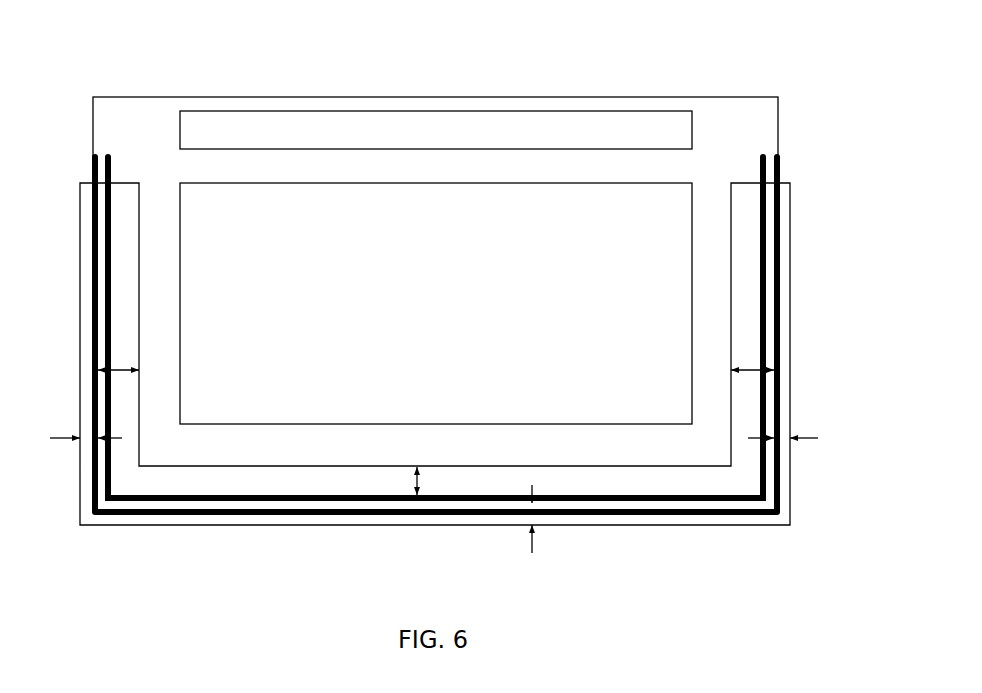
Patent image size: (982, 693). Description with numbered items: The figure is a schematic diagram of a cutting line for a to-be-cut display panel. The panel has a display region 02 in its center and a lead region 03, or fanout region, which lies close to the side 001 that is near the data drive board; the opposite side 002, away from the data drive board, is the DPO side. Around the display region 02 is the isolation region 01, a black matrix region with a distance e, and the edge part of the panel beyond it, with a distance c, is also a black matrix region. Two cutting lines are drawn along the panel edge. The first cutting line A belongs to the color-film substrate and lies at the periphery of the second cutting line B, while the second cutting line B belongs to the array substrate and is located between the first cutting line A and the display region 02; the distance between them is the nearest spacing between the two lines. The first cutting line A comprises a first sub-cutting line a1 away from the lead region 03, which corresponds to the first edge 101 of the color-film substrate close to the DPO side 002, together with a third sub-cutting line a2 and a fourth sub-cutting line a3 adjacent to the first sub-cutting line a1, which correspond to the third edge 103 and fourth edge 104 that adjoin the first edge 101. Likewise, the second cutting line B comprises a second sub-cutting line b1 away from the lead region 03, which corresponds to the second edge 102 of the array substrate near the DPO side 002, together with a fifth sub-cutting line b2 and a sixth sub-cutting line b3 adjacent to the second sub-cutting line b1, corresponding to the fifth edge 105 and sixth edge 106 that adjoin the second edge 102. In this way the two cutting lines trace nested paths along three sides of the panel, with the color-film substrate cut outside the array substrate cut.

The side close to data drive board 001 is at (395, 97).
The side away from data drive board 002 is at (282, 523).
The isolation region 01 is at (760, 213).
The display region 02 is at (598, 183).
The lead region 03 is at (510, 110).
The first cutting line A is at (92, 167).
The second cutting line B is at (112, 163).
The first sub-cutting line a1 is at (700, 515).
The third sub-cutting line a2 is at (97, 332).
The fourth sub-cutting line a3 is at (780, 297).
The second sub-cutting line b1 is at (628, 502).
The fifth sub-cutting line b2 is at (107, 277).
The sixth sub-cutting line b3 is at (765, 242).
The first edge 101 is at (167, 523).
The second edge 102 is at (373, 511).
The third edge 103 is at (84, 364).
The fourth edge 104 is at (790, 358).
The fifth edge 105 is at (99, 473).
The sixth edge 106 is at (773, 471).
The distance e is at (436, 419).
The distance c is at (434, 494).